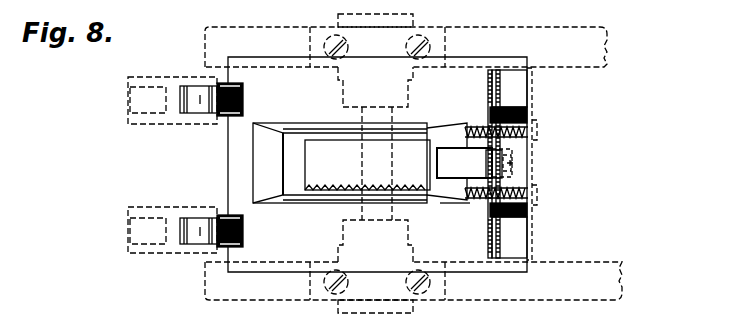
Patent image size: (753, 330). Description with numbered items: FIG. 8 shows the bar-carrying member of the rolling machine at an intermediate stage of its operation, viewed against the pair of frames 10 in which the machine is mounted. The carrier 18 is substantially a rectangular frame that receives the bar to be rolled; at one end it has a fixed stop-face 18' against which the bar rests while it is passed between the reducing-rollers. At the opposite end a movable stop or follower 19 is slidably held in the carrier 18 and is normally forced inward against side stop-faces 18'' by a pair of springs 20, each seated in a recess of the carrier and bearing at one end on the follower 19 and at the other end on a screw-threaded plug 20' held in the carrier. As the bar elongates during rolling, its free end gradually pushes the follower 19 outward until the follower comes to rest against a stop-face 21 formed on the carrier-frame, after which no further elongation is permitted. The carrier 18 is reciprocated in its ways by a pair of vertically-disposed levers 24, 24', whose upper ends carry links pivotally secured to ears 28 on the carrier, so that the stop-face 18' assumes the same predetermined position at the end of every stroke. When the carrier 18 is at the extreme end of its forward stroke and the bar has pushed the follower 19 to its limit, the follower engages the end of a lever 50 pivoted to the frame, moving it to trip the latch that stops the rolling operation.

The frame 10 is at (507, 30).
The carrier 18 is at (316, 163).
The fixed stop-face 18' is at (299, 147).
The side stop-face 18'' is at (442, 163).
The follower 19 is at (455, 201).
The spring 20 is at (495, 164).
The screw-threaded plug 20' is at (531, 164).
The stop-face 21 is at (500, 178).
The lever 24 is at (153, 230).
The lever 24' is at (152, 100).
The ear 28 is at (193, 111).
The lever 50 is at (527, 163).